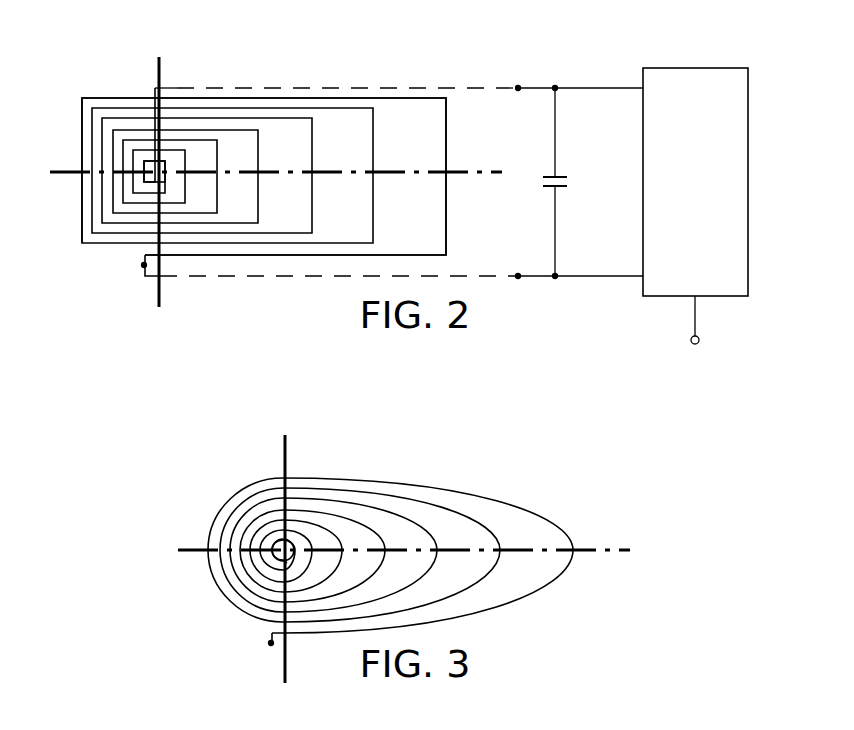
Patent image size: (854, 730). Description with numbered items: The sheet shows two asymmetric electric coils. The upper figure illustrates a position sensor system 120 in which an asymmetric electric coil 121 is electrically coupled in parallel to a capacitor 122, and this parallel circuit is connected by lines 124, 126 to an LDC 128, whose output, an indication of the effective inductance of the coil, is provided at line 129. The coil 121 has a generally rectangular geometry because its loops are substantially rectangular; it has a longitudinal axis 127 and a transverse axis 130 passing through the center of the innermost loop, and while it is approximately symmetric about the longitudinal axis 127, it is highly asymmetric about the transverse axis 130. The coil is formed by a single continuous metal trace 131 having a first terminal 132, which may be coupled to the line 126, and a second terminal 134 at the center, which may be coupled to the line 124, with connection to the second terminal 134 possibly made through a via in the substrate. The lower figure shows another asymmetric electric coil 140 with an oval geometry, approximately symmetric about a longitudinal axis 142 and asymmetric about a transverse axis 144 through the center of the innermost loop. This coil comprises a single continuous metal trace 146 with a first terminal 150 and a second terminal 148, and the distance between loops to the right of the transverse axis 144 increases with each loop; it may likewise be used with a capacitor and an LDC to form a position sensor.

In FIG. 2, the position sensor system 120 is at (516, 48).
In FIG. 2, the asymmetric electric coil 121 is at (82, 80).
In FIG. 2, the capacitor 122 is at (567, 182).
In FIG. 2, the line 124 is at (597, 86).
In FIG. 2, the line 126 is at (597, 278).
In FIG. 2, the longitudinal axis 127 is at (58, 176).
In FIG. 2, the LDC 128 is at (705, 67).
In FIG. 2, the line 129 is at (698, 315).
In FIG. 2, the transverse axis 130 is at (162, 67).
In FIG. 2, the single continuous metal trace 131 is at (398, 253).
In FIG. 2, the first terminal 132 is at (142, 266).
In FIG. 2, the second terminal 134 is at (154, 165).
In FIG. 3, the asymmetric electric coil 140 is at (390, 529).
In FIG. 3, the longitudinal axis 142 is at (187, 553).
In FIG. 3, the transverse axis 144 is at (283, 447).
In FIG. 3, the single continuous metal trace 146 is at (532, 597).
In FIG. 3, the second terminal 148 is at (269, 643).
In FIG. 3, the first terminal 150 is at (279, 547).